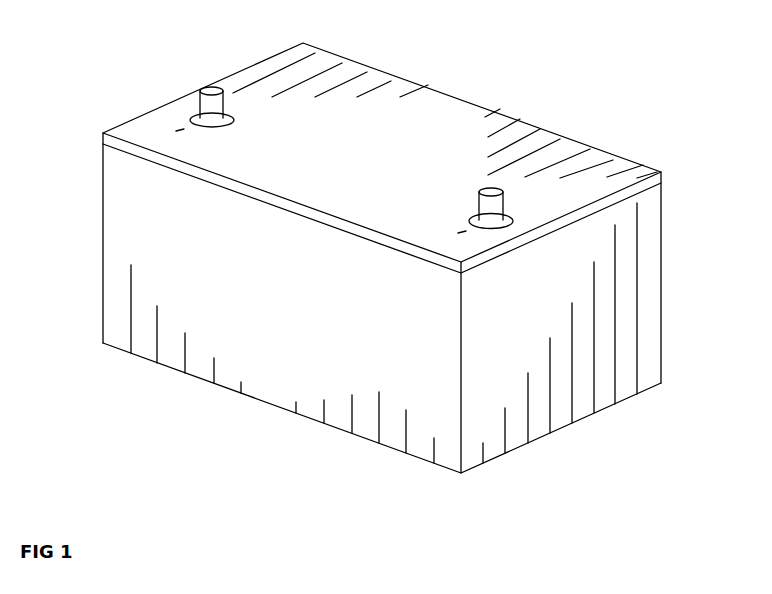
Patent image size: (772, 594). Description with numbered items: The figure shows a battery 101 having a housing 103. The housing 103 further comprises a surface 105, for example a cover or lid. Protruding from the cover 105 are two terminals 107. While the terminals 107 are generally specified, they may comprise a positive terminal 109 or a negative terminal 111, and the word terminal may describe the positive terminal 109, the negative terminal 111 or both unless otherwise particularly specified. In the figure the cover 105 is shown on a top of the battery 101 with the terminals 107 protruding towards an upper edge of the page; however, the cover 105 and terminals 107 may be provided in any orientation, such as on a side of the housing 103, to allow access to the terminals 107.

The battery 101 is at (704, 101).
The housing 103 is at (661, 249).
The surface (cover or lid) 105 is at (150, 110).
The terminals 107 is at (226, 101).
The positive terminal 109 is at (200, 90).
The negative terminal 111 is at (594, 196).